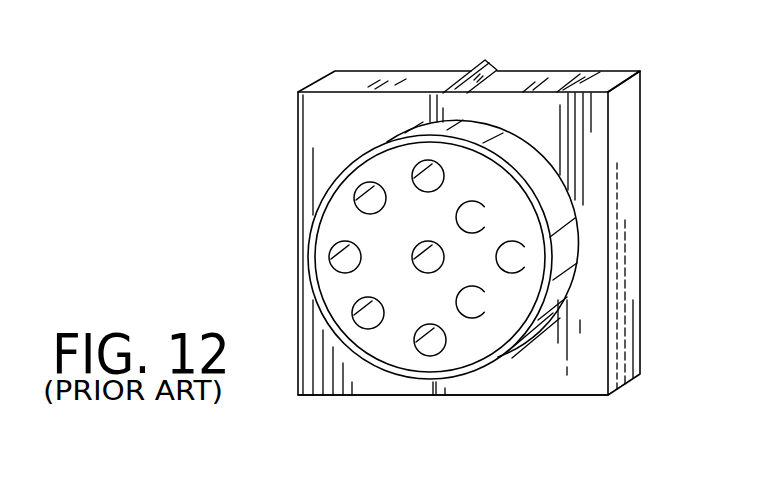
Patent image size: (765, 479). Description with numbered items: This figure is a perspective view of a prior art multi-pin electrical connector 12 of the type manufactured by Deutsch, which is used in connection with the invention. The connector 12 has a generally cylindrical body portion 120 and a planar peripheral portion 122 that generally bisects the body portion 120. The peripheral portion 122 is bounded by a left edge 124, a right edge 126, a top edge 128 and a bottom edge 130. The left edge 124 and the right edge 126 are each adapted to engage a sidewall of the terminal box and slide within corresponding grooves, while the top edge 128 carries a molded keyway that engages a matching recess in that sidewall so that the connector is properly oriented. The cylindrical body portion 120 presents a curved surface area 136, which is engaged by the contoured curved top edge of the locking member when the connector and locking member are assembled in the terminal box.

The electrical connector 12 is at (449, 60).
The cylindrical body portion 120 is at (335, 232).
The planar peripheral portion 122 is at (350, 90).
The left edge 124 is at (297, 163).
The right edge 126 is at (618, 239).
The top edge 128 is at (582, 82).
The bottom edge 130 is at (480, 397).
The curved surface area 136 is at (306, 272).